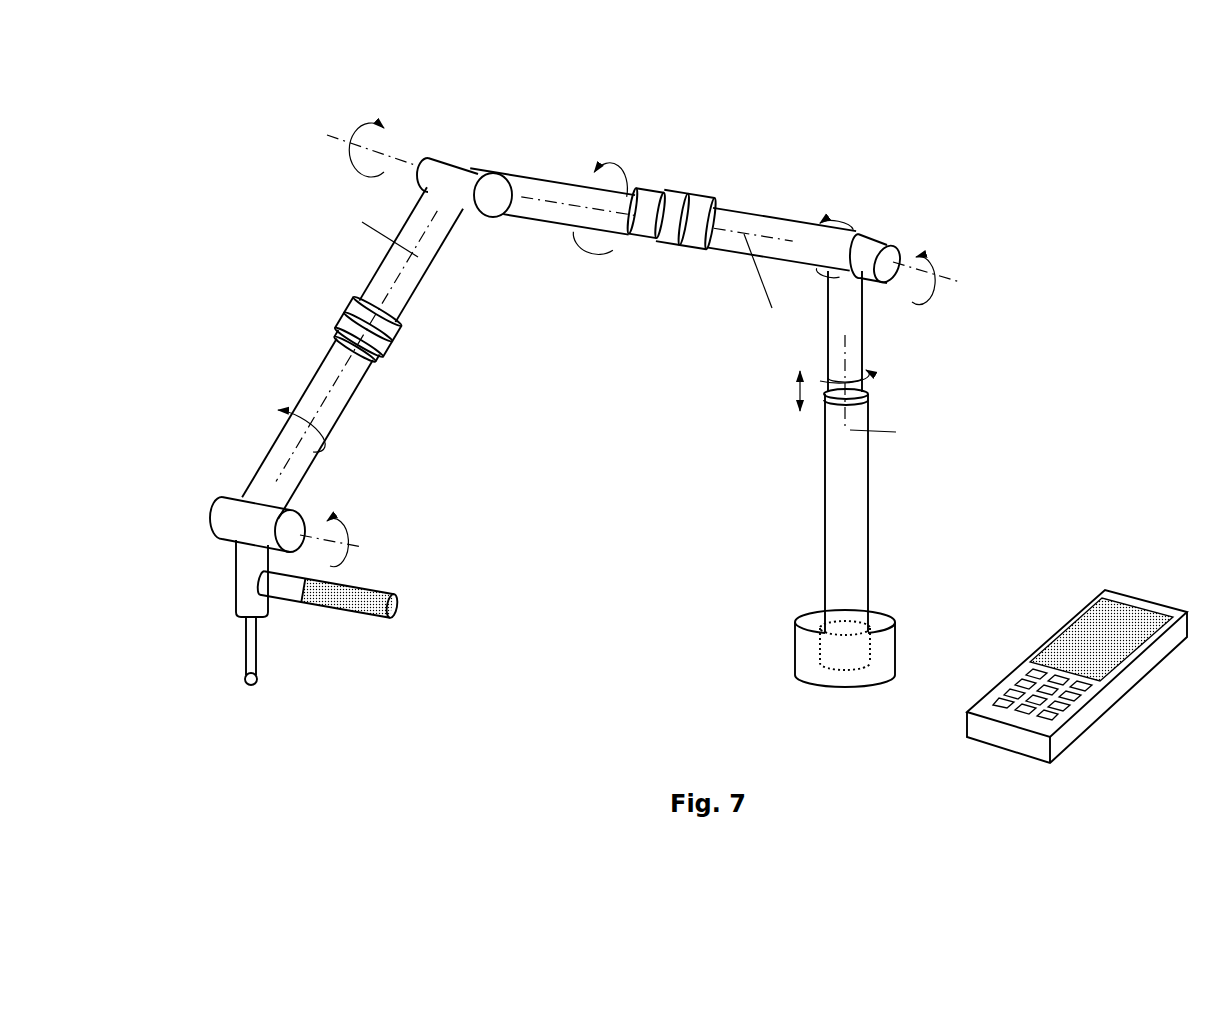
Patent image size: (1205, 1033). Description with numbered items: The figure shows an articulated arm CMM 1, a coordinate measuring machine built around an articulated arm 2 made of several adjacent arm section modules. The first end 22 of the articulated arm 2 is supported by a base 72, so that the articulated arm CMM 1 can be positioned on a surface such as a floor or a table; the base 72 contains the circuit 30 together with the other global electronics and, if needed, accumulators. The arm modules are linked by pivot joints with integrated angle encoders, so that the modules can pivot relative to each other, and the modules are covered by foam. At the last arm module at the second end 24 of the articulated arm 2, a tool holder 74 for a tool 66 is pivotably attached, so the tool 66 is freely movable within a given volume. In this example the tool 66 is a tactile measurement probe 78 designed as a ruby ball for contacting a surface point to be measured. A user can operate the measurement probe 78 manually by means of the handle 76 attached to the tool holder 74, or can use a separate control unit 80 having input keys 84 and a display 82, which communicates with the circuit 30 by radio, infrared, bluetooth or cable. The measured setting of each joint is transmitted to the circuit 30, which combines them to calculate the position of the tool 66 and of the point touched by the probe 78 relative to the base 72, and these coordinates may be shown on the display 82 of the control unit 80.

The articulated arm CMM 1 is at (1050, 250).
The articulated arm 2 is at (828, 200).
The first end 22 is at (900, 602).
The second end 24 is at (402, 523).
The circuit 30 is at (823, 658).
The tool 66 is at (274, 656).
The base 72 is at (808, 677).
The tool holder 74 is at (250, 605).
The handle 76 is at (390, 603).
The measurement probe 78 is at (246, 681).
The control unit 80 is at (1107, 580).
The display 82 is at (1115, 613).
The input keys 84 is at (1025, 674).